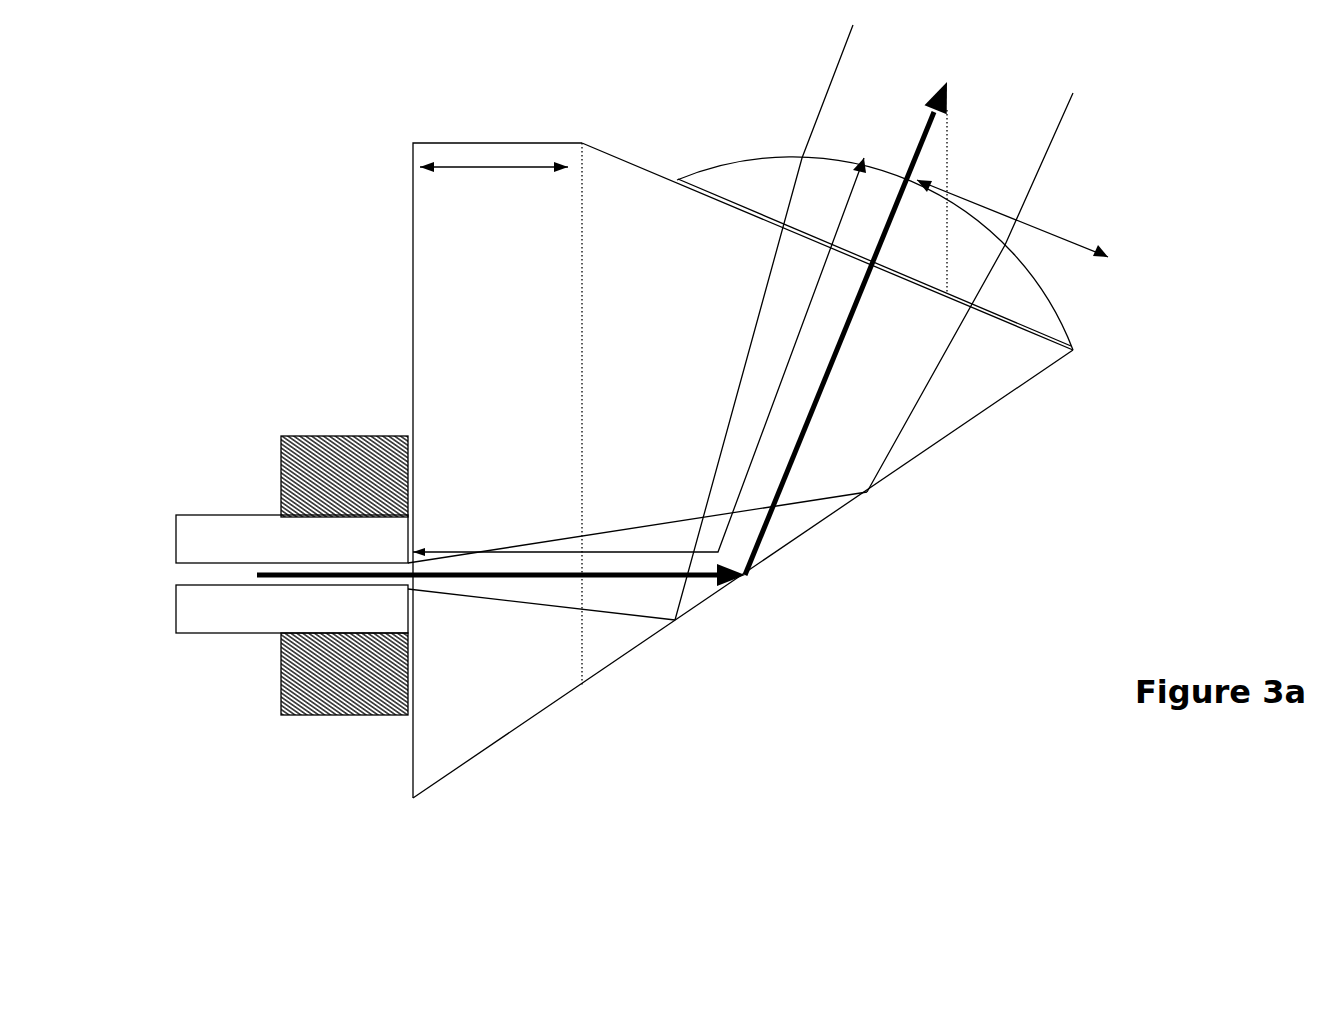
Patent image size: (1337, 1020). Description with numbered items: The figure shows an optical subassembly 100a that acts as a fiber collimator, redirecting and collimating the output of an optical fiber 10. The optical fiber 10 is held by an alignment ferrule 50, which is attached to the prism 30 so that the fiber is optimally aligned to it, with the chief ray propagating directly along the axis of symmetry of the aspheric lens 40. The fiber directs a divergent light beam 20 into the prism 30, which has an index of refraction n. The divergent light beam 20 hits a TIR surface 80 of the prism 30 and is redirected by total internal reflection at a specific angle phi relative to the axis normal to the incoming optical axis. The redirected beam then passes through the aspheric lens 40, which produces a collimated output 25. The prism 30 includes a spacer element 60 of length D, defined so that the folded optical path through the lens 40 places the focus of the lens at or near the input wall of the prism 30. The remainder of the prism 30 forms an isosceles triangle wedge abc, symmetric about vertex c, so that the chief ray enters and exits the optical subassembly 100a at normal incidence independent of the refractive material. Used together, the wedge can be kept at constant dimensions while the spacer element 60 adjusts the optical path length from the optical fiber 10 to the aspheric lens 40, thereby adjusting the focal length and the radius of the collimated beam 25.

The optical fiber 10 is at (233, 528).
The divergent light beam 20 is at (627, 587).
The collimated output 25 is at (861, 306).
The prism 30 is at (593, 657).
The aspheric lens 40 is at (1027, 293).
The alignment ferrule 50 is at (292, 689).
The spacer element 60 is at (582, 119).
The TIR surface 80 is at (740, 322).
The optical subassembly 100a is at (1075, 831).